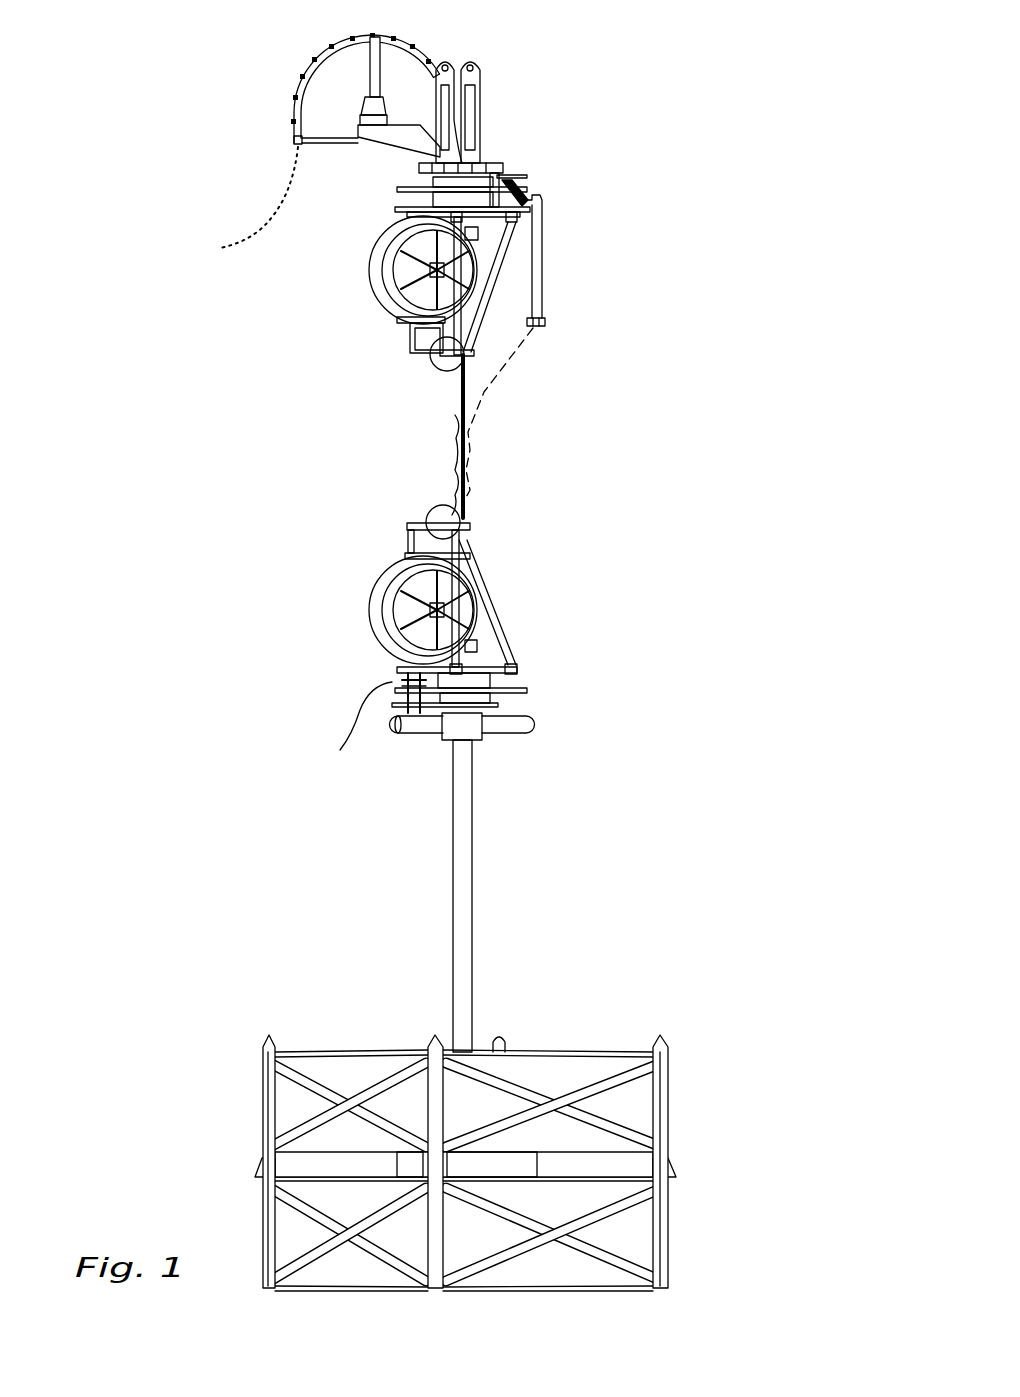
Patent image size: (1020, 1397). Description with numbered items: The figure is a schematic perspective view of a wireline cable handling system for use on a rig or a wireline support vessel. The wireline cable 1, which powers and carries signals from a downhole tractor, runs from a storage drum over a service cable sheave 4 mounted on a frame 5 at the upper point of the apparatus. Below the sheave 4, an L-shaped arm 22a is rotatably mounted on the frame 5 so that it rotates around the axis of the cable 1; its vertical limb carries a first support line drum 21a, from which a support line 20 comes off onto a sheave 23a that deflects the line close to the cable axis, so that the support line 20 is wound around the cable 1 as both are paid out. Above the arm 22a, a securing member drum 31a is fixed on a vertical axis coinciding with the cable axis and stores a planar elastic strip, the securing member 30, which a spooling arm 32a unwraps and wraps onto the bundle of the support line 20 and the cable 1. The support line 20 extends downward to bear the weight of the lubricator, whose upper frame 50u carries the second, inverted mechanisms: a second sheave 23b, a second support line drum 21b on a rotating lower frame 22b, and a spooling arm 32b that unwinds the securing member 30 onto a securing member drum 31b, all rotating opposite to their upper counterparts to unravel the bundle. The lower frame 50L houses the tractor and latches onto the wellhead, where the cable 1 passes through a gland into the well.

The wireline cable 1 is at (262, 228).
The service cable sheave 4 is at (425, 36).
The frame 5 is at (490, 137).
The securing member drum 31a is at (400, 192).
The spooling arm 32a is at (545, 208).
The first support line drum 21a is at (370, 272).
The support line 20 is at (445, 322).
The L-shaped arm 22a is at (408, 348).
The sheave 23a is at (432, 371).
The securing member 30 is at (508, 363).
The second sheave 23b is at (438, 517).
The second support line drum 21b is at (380, 603).
The lower frame 22b is at (500, 640).
The spooling arm 32b is at (400, 667).
The securing member drum 31b is at (530, 683).
The upper frame 50u is at (483, 728).
The lower frame 50L is at (706, 1127).